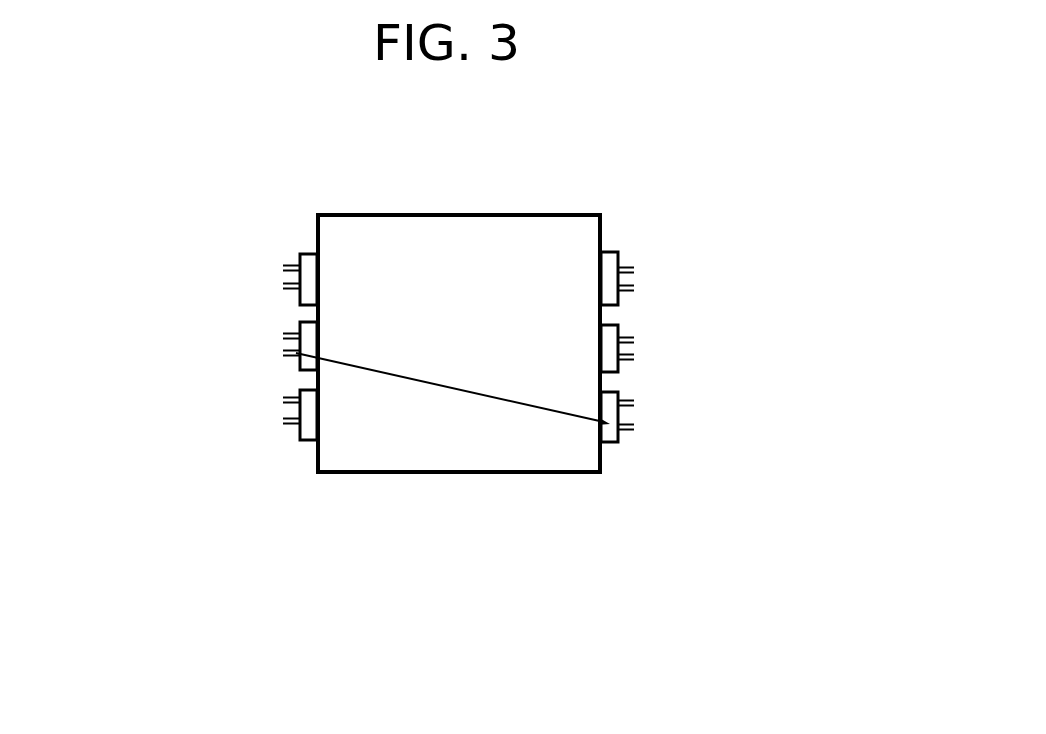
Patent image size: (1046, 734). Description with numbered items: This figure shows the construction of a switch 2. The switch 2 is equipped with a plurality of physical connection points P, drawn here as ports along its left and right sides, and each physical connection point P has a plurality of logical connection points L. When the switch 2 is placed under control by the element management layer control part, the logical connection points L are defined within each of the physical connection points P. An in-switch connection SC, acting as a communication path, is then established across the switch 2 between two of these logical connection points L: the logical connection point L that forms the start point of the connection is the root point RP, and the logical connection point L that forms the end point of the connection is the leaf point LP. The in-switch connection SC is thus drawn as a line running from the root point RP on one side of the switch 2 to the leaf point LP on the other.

The switch 2 is at (430, 215).
The physical connection point P is at (299, 257).
The logical connection point L is at (283, 336).
The root point RP is at (287, 353).
The leaf point LP is at (636, 427).
The in-switch connection SC is at (408, 383).